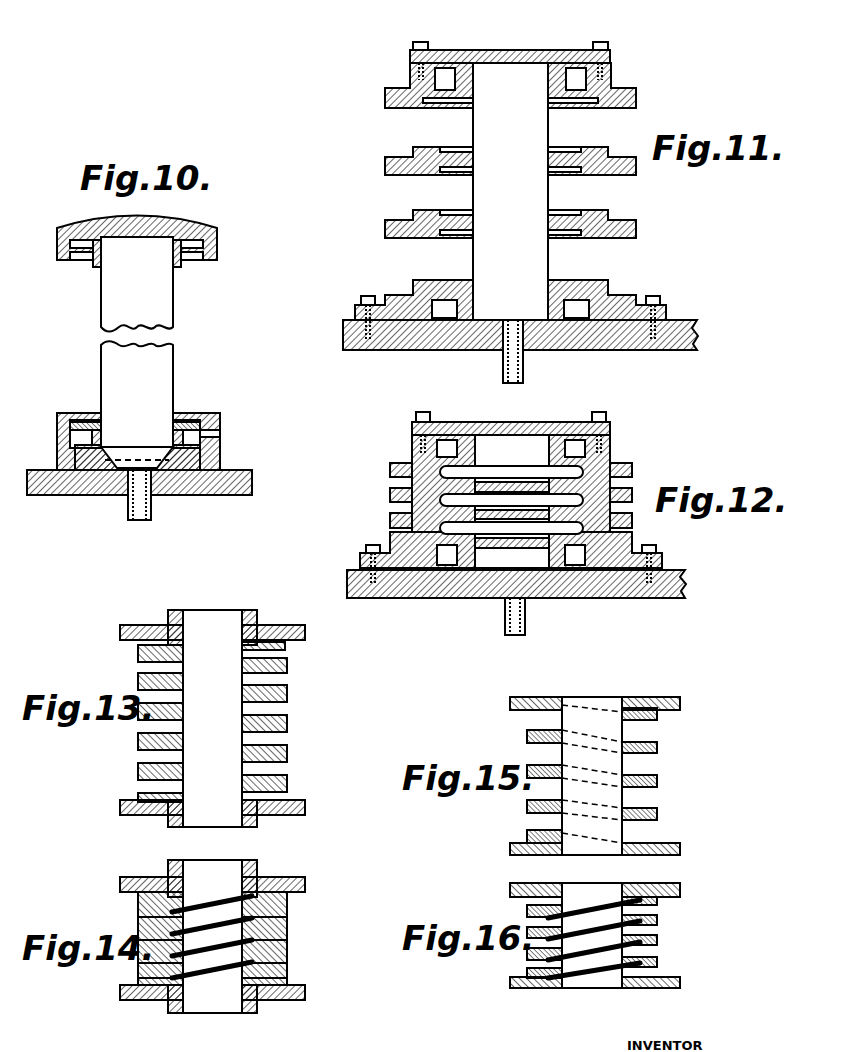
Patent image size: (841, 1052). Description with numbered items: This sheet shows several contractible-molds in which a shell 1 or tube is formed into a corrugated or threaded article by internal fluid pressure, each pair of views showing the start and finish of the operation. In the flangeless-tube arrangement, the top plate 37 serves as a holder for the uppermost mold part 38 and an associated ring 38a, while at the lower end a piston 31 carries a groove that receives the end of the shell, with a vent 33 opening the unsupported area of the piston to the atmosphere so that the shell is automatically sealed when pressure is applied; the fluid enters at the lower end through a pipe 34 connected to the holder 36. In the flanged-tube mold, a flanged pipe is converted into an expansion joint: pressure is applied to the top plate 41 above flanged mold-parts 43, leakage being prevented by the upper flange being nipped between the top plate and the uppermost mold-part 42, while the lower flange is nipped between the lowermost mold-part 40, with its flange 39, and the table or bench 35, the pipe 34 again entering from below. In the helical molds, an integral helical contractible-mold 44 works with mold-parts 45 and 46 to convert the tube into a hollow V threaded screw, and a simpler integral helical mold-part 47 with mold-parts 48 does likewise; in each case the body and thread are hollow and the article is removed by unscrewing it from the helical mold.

In FIG. 10, the flanged shell 1 is at (173, 315).
In FIG. 11, the flanged shell 1 is at (548, 133).
In FIG. 13, the flanged shell 1 is at (183, 650).
In FIG. 10, the piston 31 is at (95, 470).
In FIG. 10, the vent 33 is at (215, 436).
In FIG. 10, the pipe 34 is at (152, 505).
In FIG. 11, the pipe 34 is at (525, 368).
In FIG. 12, the pipe 34 is at (505, 612).
In FIG. 11, the table or bench 35 is at (632, 335).
In FIG. 12, the table or bench 35 is at (435, 590).
In FIG. 10, the holder 36 is at (232, 480).
In FIG. 10, the top plate 37 is at (197, 220).
In FIG. 10, the uppermost mold part 38 is at (180, 266).
In FIG. 10, the bushing ring 38a is at (180, 430).
In FIG. 11, the bottom flange 39 is at (618, 295).
In FIG. 12, the bottom flange 39 is at (393, 550).
In FIG. 11, the lowermost mold-part 40 is at (578, 282).
In FIG. 12, the lowermost mold-part 40 is at (600, 570).
In FIG. 11, the cover plate 41 is at (505, 52).
In FIG. 12, the cover plate 41 is at (455, 427).
In FIG. 11, the uppermost mold-part 42 is at (458, 95).
In FIG. 12, the uppermost mold-part 42 is at (468, 460).
In FIG. 11, the upper flange 43 is at (620, 102).
In FIG. 12, the upper flange 43 is at (395, 465).
In FIG. 13, the integral helical contractible-mold 44 is at (287, 695).
In FIG. 14, the integral helical contractible-mold 44 is at (287, 945).
In FIG. 13, the mold-part 45 is at (255, 613).
In FIG. 14, the mold-part 45 is at (258, 862).
In FIG. 13, the mold-part 46 is at (258, 820).
In FIG. 14, the mold-part 46 is at (258, 1003).
In FIG. 15, the integral helical mold-part 47 is at (527, 735).
In FIG. 16, the integral helical mold-part 47 is at (657, 965).
In FIG. 15, the mold-parts 48 is at (650, 700).
In FIG. 16, the mold-parts 48 is at (680, 890).